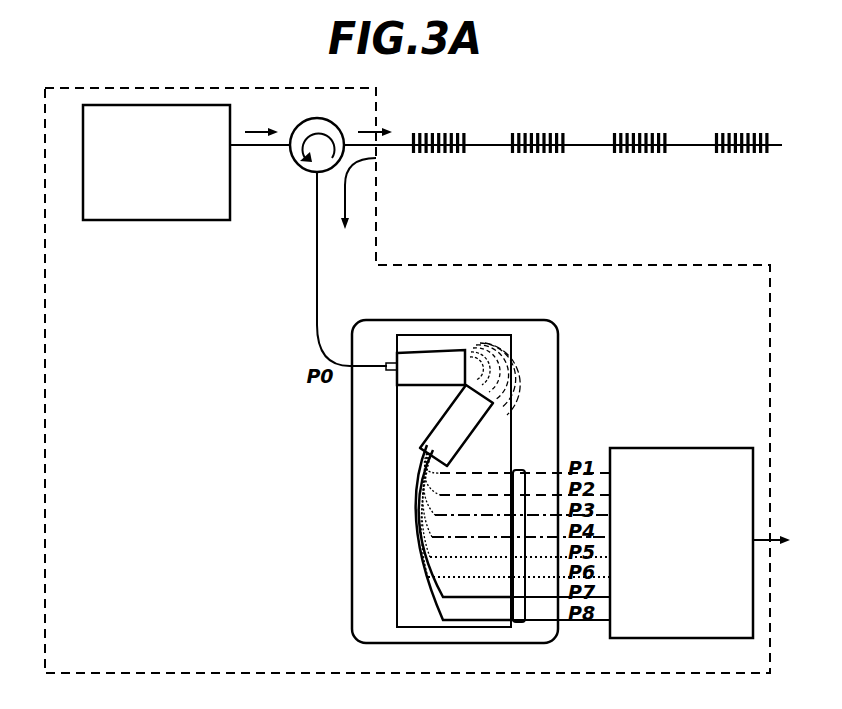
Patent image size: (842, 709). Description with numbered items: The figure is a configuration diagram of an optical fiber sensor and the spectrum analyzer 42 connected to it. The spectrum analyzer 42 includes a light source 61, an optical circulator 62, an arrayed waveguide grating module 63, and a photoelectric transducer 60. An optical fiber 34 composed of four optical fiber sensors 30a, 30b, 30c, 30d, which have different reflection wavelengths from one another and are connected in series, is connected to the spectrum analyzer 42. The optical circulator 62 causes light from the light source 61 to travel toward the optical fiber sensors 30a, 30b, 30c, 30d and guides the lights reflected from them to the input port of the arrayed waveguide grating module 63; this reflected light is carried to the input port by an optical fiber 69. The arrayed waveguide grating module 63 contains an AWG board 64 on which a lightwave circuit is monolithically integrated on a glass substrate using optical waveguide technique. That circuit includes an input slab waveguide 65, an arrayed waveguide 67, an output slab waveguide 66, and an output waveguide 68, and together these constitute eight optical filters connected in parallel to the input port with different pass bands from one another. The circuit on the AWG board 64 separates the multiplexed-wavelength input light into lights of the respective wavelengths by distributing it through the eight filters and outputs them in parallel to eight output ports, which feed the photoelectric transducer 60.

The spectrum analyzer 42 is at (303, 85).
The light source 61 is at (191, 222).
The optical circulator 62 is at (302, 169).
The optical fiber sensor 30a is at (440, 128).
The optical fiber sensor 30b is at (538, 128).
The optical fiber sensor 30c is at (640, 128).
The optical fiber sensor 30d is at (740, 128).
The optical fiber 34 is at (778, 140).
The optical fiber 69 is at (316, 319).
The arrayed waveguide grating module 63 is at (352, 458).
The AWG board 64 is at (397, 545).
The input slab waveguide 65 is at (440, 350).
The arrayed waveguide 67 is at (489, 354).
The output slab waveguide 66 is at (482, 422).
The output waveguide 68 is at (425, 585).
The photoelectric transducer 60 is at (677, 447).